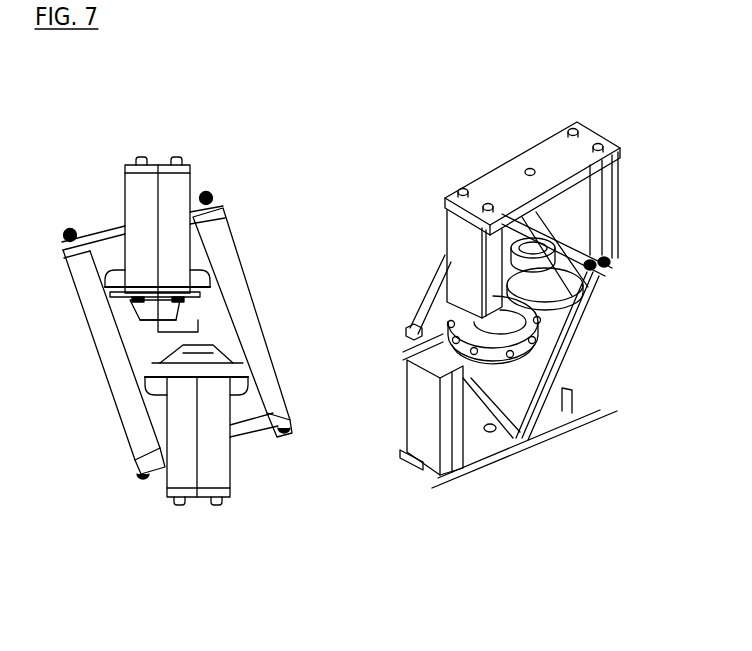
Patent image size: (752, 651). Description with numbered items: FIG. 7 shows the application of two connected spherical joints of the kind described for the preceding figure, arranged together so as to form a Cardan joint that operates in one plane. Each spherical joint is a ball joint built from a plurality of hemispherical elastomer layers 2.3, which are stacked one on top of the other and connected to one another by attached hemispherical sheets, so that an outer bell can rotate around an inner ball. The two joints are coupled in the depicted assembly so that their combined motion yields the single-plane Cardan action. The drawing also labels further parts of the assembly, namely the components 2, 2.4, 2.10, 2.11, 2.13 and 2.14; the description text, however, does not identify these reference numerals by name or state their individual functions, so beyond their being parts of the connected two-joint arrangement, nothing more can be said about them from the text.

The actuator unit 2 is at (448, 298).
The hemispherical elastomer layers 2.3 is at (522, 240).
The bearing ring 2.4 is at (548, 250).
The mounting plate 2.10 is at (590, 170).
The lower actuator housing 2.11 is at (447, 480).
The inclined struts 2.13 is at (543, 422).
The coupling 2.14 is at (177, 330).